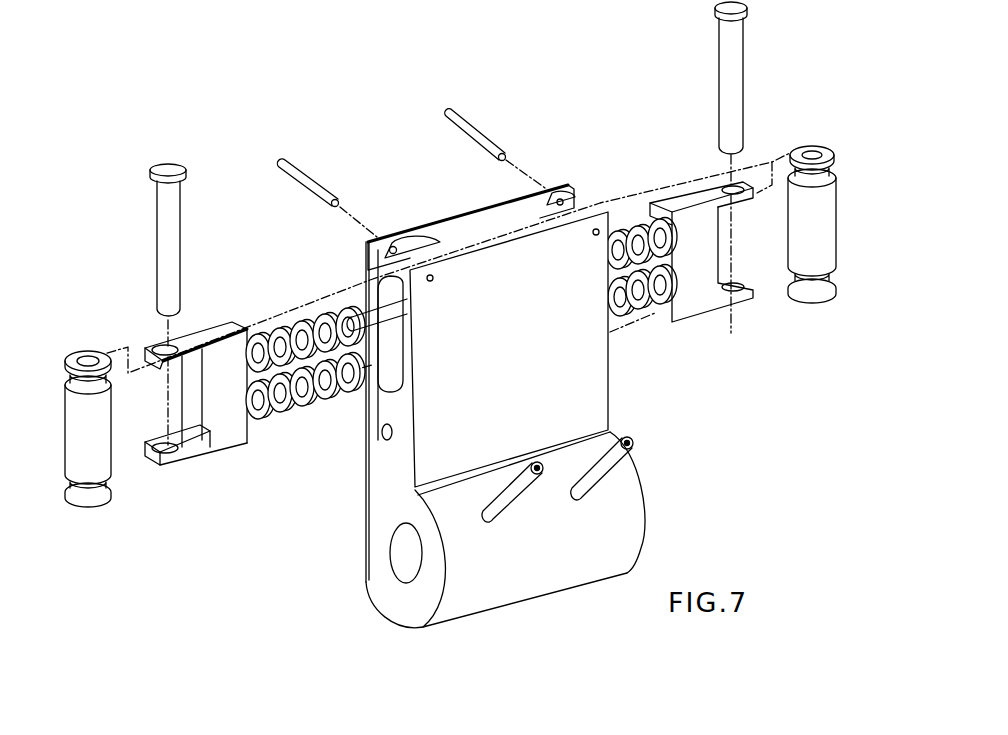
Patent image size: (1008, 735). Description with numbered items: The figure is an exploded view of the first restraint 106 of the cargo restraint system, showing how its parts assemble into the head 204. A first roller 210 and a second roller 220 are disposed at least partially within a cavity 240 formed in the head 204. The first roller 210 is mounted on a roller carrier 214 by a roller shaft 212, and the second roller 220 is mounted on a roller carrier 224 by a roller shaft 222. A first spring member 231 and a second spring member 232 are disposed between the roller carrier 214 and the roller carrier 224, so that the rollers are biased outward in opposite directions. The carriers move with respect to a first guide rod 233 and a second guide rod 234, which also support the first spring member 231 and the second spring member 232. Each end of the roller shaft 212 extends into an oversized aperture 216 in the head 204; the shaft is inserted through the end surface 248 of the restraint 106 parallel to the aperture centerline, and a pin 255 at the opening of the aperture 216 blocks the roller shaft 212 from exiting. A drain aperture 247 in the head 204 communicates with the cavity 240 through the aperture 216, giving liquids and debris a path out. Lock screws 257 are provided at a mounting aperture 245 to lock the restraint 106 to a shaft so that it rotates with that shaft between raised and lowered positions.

The restraint 106 is at (172, 105).
The head 204 is at (469, 384).
The first roller 210 is at (68, 447).
The roller shaft 212 is at (158, 226).
The roller carrier 214 is at (219, 336).
The aperture 216 is at (372, 402).
The second roller 220 is at (845, 211).
The roller shaft 222 is at (730, 65).
The roller carrier 224 is at (688, 203).
The first spring member 231 is at (268, 330).
The second spring member 232 is at (290, 420).
The first guide rod 233 is at (390, 317).
The second guide rod 234 is at (640, 312).
The cavity 240 is at (376, 293).
The mounting aperture 245 is at (392, 549).
The drain aperture 247 is at (381, 440).
The end surface 248 is at (452, 238).
The pin 255 is at (304, 180).
The lock screws 257 is at (517, 487).